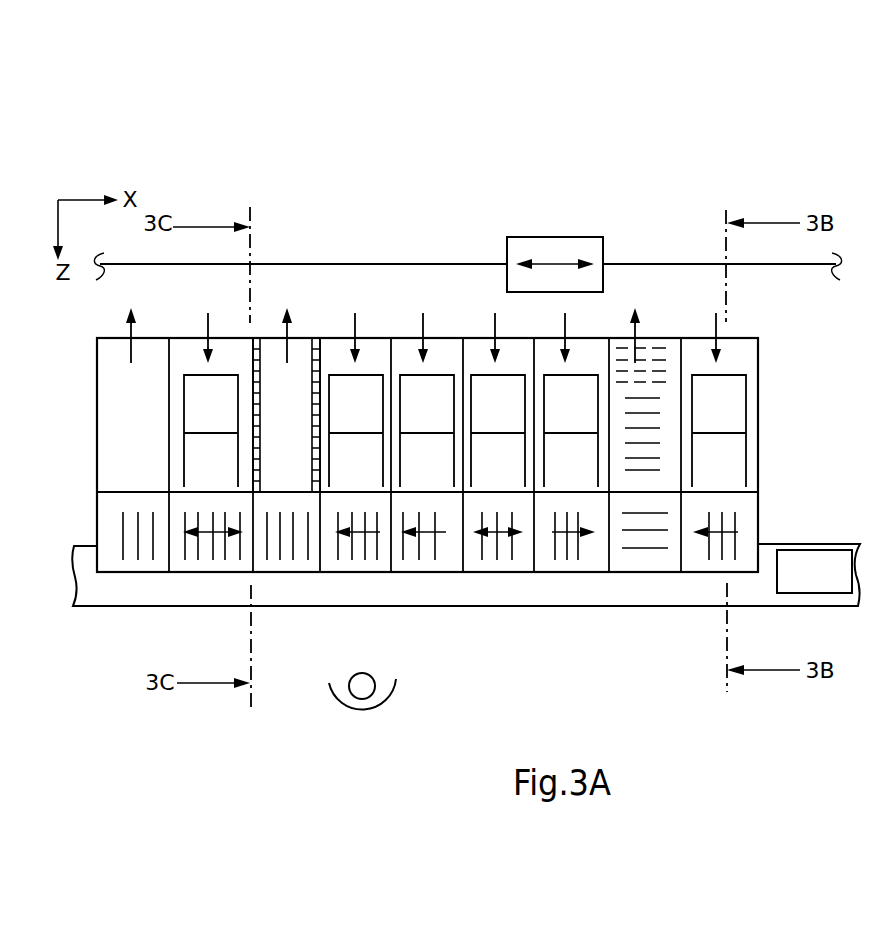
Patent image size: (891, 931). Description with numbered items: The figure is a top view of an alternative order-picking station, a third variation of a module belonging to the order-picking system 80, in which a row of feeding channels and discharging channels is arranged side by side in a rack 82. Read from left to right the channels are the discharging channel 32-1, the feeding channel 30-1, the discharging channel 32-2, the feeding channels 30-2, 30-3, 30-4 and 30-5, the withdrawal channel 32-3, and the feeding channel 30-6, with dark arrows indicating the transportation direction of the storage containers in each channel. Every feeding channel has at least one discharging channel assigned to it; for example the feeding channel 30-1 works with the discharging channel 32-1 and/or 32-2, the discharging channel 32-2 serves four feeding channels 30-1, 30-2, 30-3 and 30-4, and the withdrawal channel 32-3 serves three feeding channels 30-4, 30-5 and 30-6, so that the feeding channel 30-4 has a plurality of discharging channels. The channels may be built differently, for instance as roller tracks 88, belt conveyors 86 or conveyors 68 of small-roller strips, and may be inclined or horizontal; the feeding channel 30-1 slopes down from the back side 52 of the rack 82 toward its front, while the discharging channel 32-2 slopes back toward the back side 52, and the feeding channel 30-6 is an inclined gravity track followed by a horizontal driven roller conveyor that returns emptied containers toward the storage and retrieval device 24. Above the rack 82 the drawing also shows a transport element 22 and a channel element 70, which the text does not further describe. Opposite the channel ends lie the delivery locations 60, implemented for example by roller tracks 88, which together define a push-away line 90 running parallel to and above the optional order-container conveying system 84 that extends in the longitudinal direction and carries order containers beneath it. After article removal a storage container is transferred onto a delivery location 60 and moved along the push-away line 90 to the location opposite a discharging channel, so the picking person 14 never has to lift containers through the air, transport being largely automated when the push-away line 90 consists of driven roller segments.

The picking person 14 is at (391, 706).
The transport device 22 is at (529, 196).
The storage and retrieval device 24 is at (547, 236).
The feeding channel 30-1 is at (180, 337).
The feeding channel 30-2 is at (323, 337).
The feeding channel 30-3 is at (400, 337).
The feeding channel 30-4 is at (473, 337).
The feeding channel 30-5 is at (608, 338).
The feeding channel 30-6 is at (740, 337).
The discharging channel 32-1 is at (97, 443).
The discharging channel 32-2 is at (268, 337).
The withdrawal channel 32-3 is at (655, 337).
The back side 52 is at (98, 336).
The delivery locations 60 is at (137, 573).
The conveyors of small-roller strips 68 is at (277, 458).
The partition wall 70 is at (259, 383).
The order-picking system 80 is at (425, 321).
The rack 82 is at (767, 404).
The order-container conveying system 84 is at (455, 607).
The belt conveyors 86 is at (114, 433).
The roller tracks 88 is at (637, 412).
The push-away line 90 is at (755, 507).